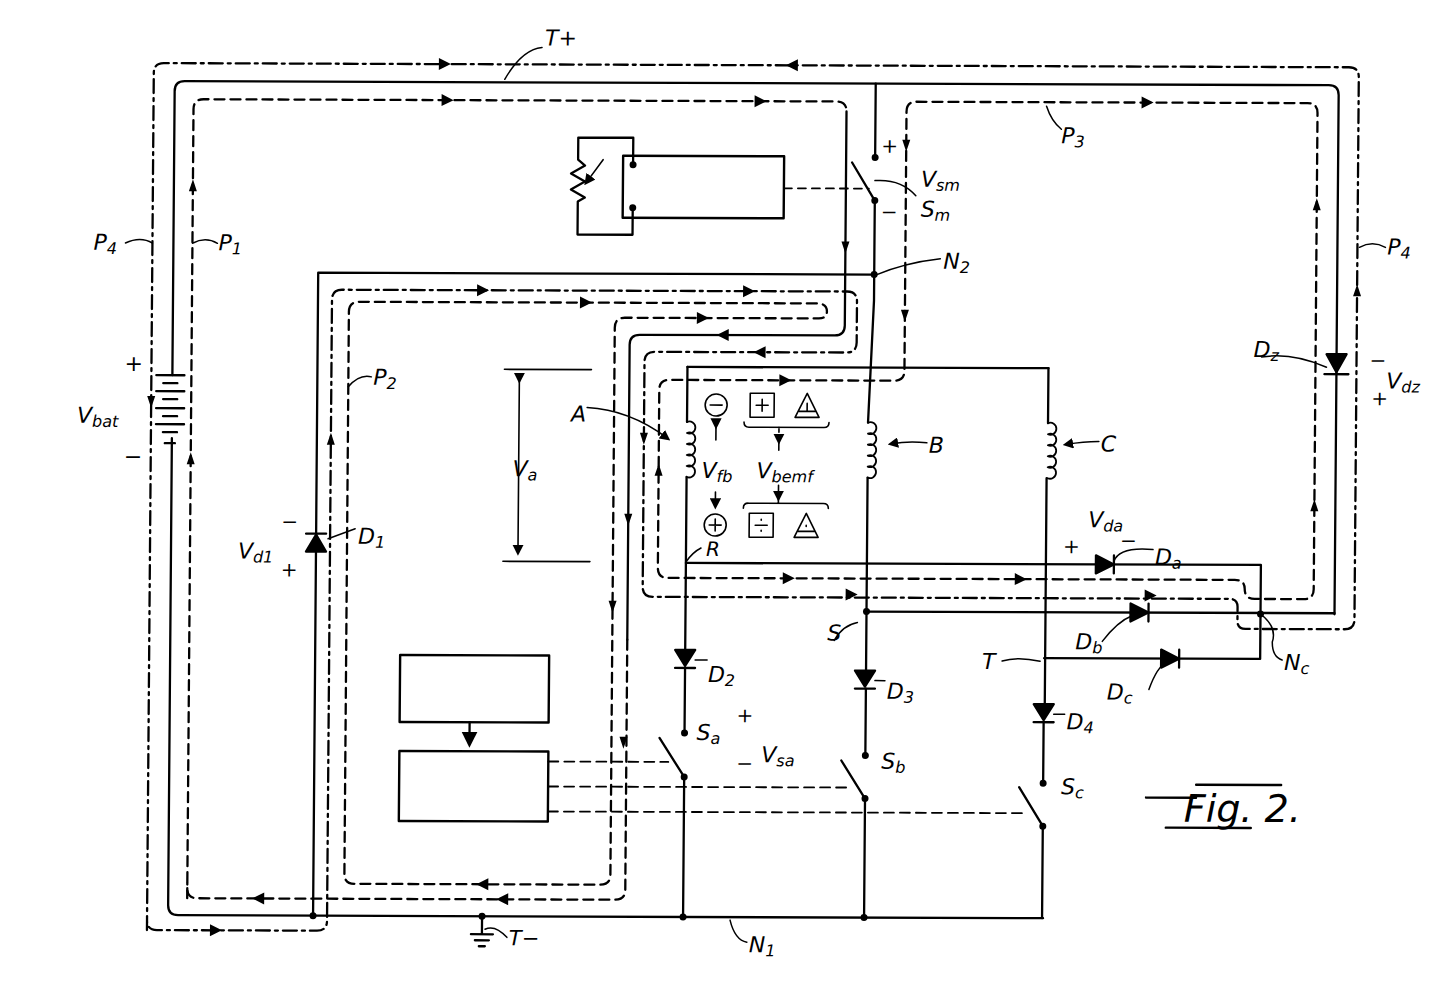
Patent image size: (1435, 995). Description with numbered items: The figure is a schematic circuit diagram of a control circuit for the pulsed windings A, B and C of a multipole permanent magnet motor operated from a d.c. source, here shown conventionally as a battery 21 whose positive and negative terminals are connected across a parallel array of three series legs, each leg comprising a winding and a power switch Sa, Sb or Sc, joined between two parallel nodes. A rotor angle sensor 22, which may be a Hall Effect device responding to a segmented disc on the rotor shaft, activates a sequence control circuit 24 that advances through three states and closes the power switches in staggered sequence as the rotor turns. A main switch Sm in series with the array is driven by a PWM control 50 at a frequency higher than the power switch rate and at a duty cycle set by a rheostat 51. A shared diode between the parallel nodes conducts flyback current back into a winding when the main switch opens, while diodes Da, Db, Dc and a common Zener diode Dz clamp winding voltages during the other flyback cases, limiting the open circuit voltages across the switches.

The battery 21 is at (180, 378).
The rotor angle sensor 22 is at (440, 656).
The sequence control circuit 24 is at (435, 822).
The PWM control 50 is at (690, 156).
The rheostat 51 is at (578, 184).